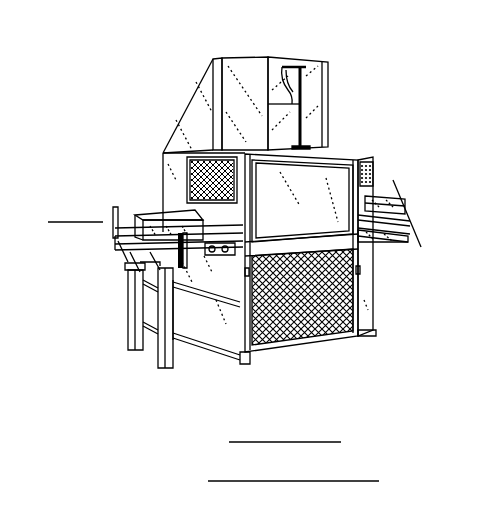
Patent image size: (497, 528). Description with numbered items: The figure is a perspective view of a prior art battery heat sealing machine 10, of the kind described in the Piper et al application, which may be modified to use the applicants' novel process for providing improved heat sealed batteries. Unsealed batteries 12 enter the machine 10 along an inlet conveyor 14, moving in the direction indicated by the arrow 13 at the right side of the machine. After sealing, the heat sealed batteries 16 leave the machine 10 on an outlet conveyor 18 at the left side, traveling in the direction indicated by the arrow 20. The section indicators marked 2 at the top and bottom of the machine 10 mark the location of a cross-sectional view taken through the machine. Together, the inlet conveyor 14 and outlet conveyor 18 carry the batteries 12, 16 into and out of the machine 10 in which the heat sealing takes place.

The battery heat sealing machine 10 is at (155, 103).
The section line 2- 2 is at (322, 53).
The unsealed batteries 12 is at (400, 205).
The arrow 13 is at (423, 203).
The inlet conveyor 14 is at (403, 240).
The heat sealed batteries 16 is at (147, 212).
The outlet conveyor 18 is at (118, 263).
The arrow 20 is at (103, 222).